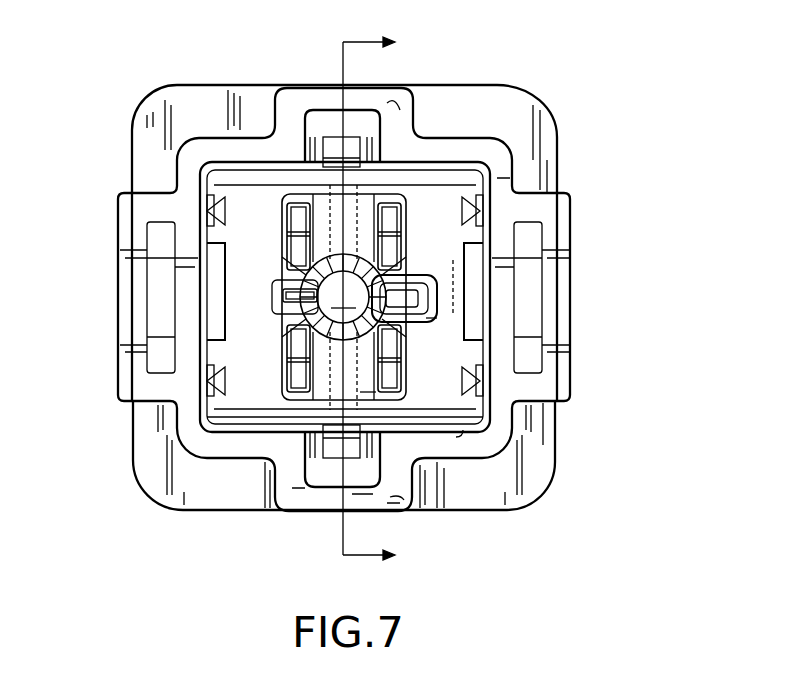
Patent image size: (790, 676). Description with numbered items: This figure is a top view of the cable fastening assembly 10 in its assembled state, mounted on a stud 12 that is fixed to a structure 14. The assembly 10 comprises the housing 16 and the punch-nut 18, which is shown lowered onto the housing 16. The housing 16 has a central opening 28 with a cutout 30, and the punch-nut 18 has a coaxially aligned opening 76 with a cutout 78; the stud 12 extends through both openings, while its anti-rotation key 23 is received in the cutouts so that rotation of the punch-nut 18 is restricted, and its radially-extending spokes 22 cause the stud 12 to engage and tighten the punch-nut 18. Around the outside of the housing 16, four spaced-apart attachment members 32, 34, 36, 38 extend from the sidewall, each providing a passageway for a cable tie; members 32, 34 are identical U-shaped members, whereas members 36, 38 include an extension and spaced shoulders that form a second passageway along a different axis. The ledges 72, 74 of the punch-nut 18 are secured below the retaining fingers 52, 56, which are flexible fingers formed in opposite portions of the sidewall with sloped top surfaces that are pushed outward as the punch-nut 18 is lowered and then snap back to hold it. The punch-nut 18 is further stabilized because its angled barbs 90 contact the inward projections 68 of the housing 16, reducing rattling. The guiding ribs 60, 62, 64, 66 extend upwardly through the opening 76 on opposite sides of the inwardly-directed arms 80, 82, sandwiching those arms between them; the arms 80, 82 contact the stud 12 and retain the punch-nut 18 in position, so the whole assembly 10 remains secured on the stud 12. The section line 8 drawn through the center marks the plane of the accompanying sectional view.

The section line 8- 8 is at (378, 298).
The cable fastening assembly 10 is at (606, 215).
The stud 12 is at (343, 297).
The structure 14 is at (525, 103).
The housing 16 is at (498, 440).
The punch-nut 18 is at (463, 437).
The spokes 22 is at (285, 293).
The anti-rotation key 23 is at (408, 296).
The opening 28 is at (281, 271).
The cutout 30 is at (430, 322).
The attachment member 32 is at (390, 103).
The attachment member 34 is at (398, 497).
The attachment member 36 is at (562, 289).
The attachment member 38 is at (130, 287).
The retaining finger 52 is at (332, 450).
The retaining finger 56 is at (333, 143).
The guiding rib 60 is at (392, 222).
The guiding rib 62 is at (290, 212).
The guiding rib 64 is at (398, 383).
The guiding rib 66 is at (292, 385).
The projections 68 is at (228, 222).
The ledge 72 is at (267, 183).
The ledge 74 is at (287, 418).
The opening 76 is at (280, 297).
The cutout 78 is at (437, 323).
The arm 80 is at (368, 392).
The arm 82 is at (357, 220).
The barbs 90 is at (228, 223).